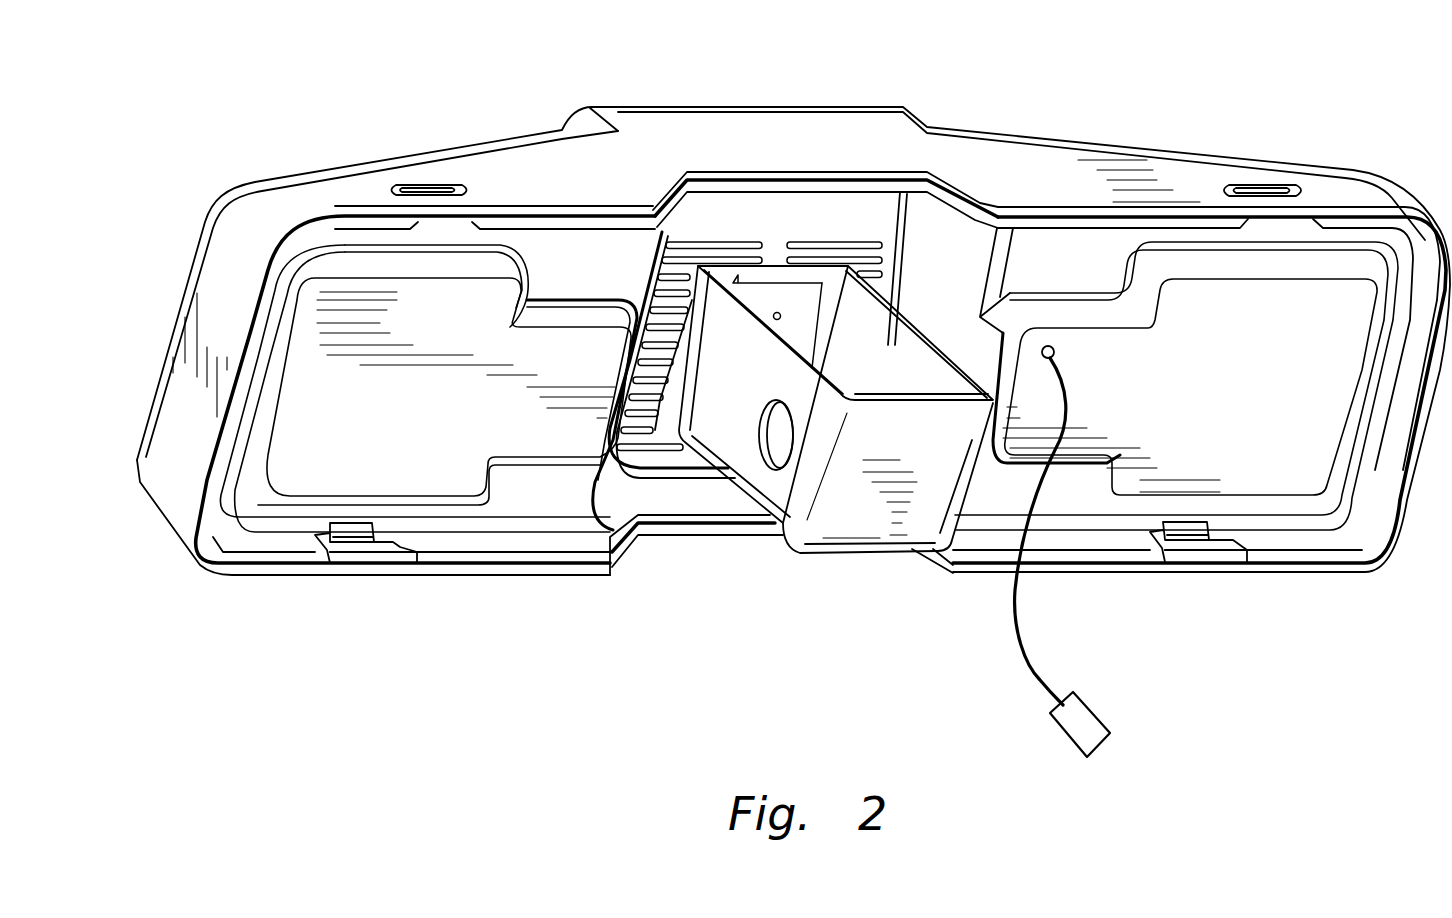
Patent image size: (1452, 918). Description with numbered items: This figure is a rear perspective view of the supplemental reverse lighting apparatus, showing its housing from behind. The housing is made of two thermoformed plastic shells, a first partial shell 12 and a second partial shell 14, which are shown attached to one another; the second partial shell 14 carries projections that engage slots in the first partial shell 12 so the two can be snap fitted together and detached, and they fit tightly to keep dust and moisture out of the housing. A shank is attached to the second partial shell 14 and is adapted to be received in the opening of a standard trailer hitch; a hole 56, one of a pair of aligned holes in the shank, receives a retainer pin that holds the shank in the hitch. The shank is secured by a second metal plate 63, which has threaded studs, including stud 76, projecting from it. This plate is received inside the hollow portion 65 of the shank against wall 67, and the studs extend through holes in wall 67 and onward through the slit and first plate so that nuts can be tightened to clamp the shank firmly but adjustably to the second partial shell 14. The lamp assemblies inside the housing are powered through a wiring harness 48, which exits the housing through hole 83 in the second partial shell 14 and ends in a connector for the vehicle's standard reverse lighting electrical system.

The first partial shell 12 is at (265, 215).
The second partial shell 14 is at (307, 447).
The wiring harness 48 is at (1022, 663).
The hole 56 is at (777, 437).
The second metal plate 63 is at (758, 298).
The hollow portion 65 is at (882, 345).
The wall 67 is at (724, 272).
The threaded stud 76 is at (780, 313).
The hole 83 is at (1050, 346).